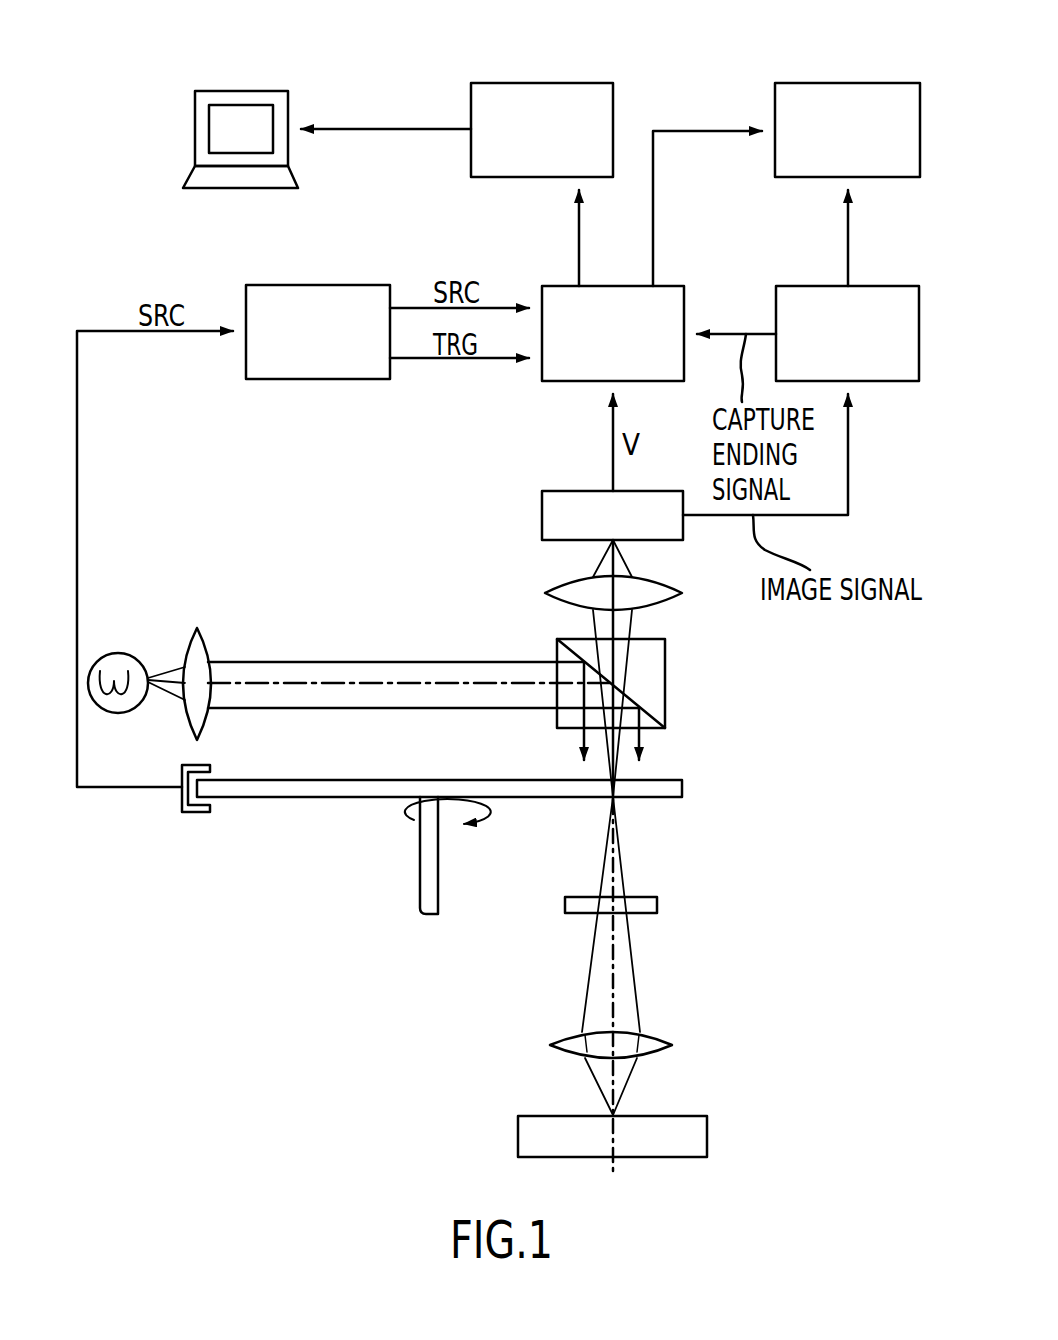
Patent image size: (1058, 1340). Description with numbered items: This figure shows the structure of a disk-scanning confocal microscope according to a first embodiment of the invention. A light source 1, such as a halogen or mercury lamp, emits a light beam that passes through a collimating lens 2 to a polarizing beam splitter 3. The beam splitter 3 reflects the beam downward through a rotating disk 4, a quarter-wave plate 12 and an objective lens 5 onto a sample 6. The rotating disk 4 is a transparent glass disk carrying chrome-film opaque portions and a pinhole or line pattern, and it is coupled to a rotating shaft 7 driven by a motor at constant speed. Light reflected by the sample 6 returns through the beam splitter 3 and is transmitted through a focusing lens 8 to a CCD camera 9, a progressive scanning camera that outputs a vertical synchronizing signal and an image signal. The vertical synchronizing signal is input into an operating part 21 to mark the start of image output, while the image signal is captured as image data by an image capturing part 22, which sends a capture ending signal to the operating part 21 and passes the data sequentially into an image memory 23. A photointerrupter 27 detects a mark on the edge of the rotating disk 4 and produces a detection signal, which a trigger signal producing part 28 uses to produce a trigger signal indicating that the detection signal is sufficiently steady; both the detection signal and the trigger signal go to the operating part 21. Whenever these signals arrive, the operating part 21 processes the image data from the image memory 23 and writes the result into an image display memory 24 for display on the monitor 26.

The light source 1 is at (121, 653).
The collimating lens 2 is at (197, 628).
The polarizing beam splitter 3 is at (665, 700).
The rotating disk 4 is at (688, 790).
The objective lens 5 is at (672, 1043).
The sample 6 is at (518, 1134).
The rotating shaft 7 is at (420, 875).
The focusing lens 8 is at (545, 596).
The CCD camera 9 is at (542, 512).
The quarter-wave plate 12 is at (657, 900).
The operating part 21 is at (542, 288).
The image capturing part 22 is at (888, 381).
The image memory 23 is at (853, 83).
The image display memory 24 is at (548, 83).
The monitor 26 is at (195, 120).
The photointerrupter 27 is at (195, 812).
The trigger signal producing part 28 is at (246, 298).